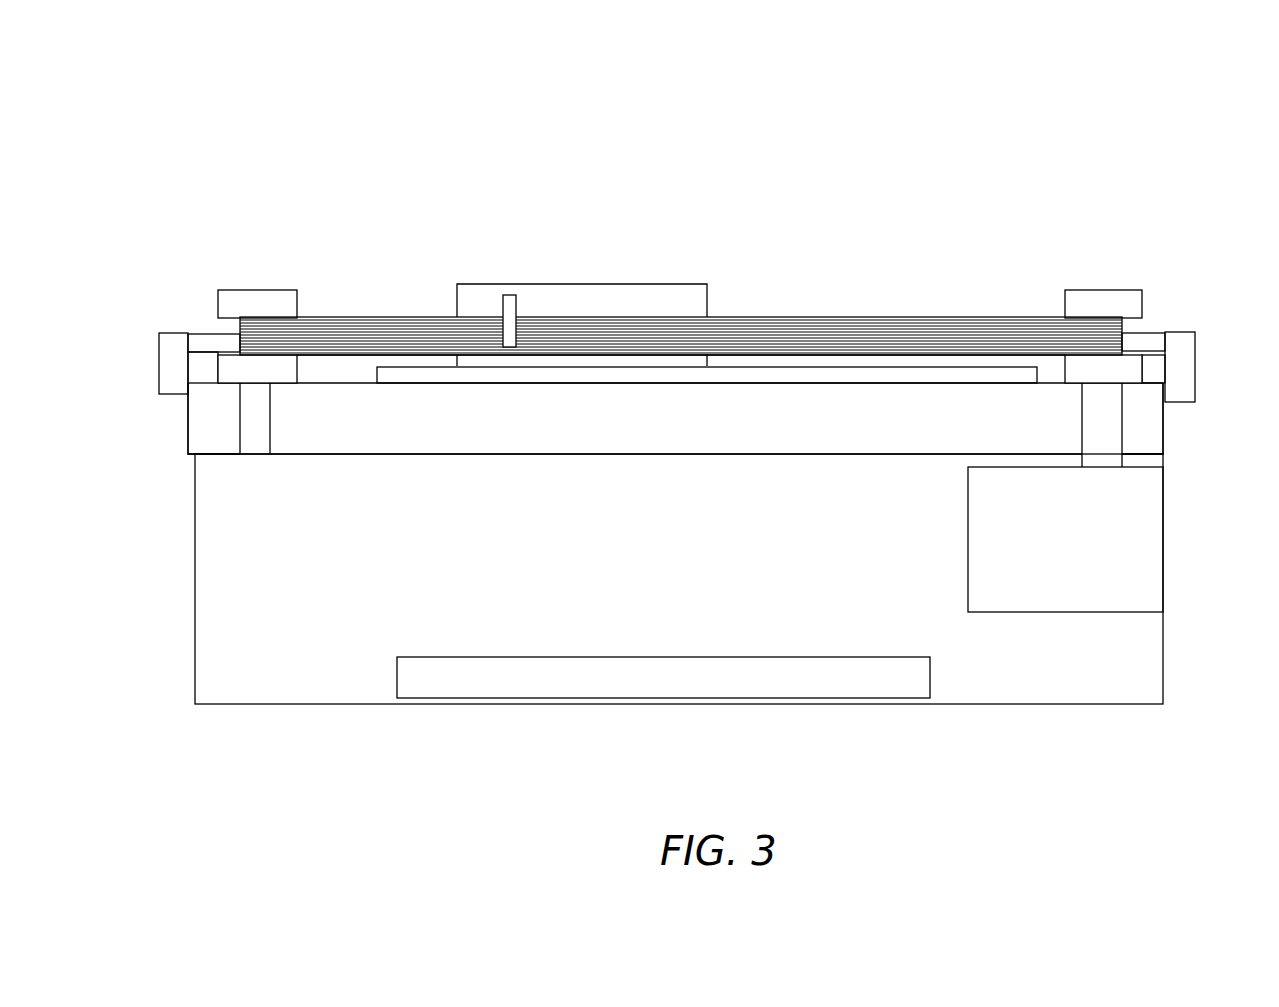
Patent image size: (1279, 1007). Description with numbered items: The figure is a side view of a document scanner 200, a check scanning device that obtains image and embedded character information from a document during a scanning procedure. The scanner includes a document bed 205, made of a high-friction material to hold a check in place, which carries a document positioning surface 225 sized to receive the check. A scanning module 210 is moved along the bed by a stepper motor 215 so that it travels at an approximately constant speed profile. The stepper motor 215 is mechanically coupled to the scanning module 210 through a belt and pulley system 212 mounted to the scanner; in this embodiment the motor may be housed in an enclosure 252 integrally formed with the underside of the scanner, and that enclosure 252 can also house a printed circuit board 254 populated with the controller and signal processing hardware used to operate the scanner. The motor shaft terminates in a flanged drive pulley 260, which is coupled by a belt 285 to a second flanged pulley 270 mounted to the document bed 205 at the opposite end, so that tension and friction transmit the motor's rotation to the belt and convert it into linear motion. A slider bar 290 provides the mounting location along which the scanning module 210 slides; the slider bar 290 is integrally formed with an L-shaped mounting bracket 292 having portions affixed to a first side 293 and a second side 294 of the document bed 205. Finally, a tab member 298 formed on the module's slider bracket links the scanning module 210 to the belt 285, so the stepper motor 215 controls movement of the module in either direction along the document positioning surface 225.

The document scanner 200 is at (433, 100).
The document bed 205 is at (350, 380).
The scanning module 210 is at (633, 298).
The belt and pulley system 212 is at (775, 270).
The stepper motor 215 is at (1137, 540).
The document positioning surface 225 is at (437, 365).
The enclosure 252 is at (233, 548).
The printed circuit board 254 is at (490, 655).
The flanged drive pulley 260 is at (1083, 298).
The second flanged pulley 270 is at (253, 305).
The belt 285 is at (852, 328).
The slider bar 290 is at (1147, 340).
The L-shaped mounting bracket 292 is at (176, 348).
The first side of the document bed 293 is at (188, 420).
The second side of the document bed 294 is at (1167, 427).
The tab member 298 is at (518, 306).